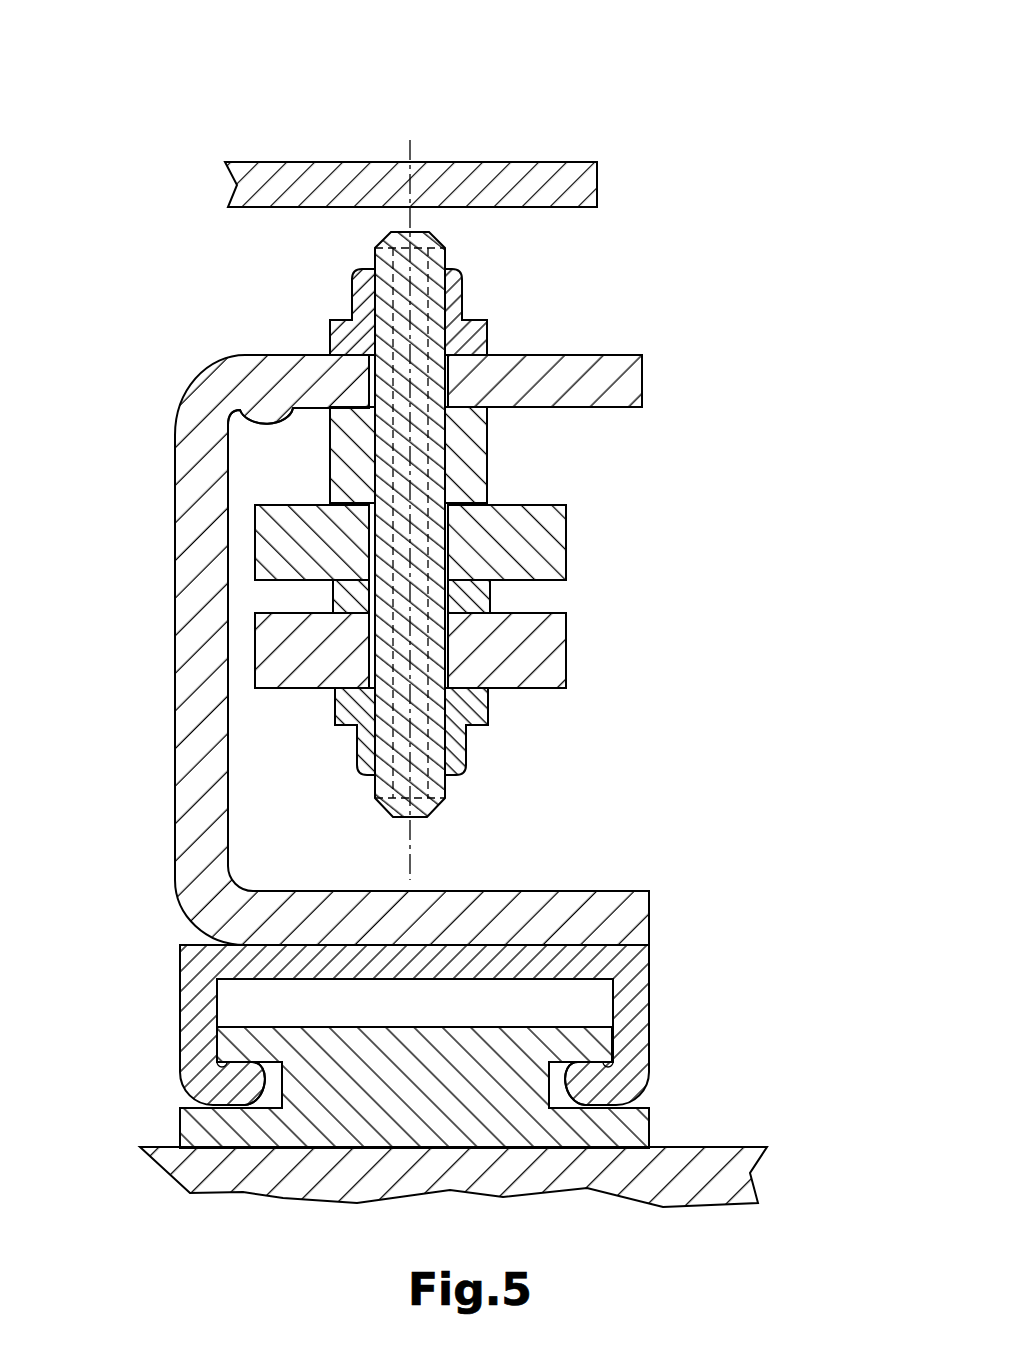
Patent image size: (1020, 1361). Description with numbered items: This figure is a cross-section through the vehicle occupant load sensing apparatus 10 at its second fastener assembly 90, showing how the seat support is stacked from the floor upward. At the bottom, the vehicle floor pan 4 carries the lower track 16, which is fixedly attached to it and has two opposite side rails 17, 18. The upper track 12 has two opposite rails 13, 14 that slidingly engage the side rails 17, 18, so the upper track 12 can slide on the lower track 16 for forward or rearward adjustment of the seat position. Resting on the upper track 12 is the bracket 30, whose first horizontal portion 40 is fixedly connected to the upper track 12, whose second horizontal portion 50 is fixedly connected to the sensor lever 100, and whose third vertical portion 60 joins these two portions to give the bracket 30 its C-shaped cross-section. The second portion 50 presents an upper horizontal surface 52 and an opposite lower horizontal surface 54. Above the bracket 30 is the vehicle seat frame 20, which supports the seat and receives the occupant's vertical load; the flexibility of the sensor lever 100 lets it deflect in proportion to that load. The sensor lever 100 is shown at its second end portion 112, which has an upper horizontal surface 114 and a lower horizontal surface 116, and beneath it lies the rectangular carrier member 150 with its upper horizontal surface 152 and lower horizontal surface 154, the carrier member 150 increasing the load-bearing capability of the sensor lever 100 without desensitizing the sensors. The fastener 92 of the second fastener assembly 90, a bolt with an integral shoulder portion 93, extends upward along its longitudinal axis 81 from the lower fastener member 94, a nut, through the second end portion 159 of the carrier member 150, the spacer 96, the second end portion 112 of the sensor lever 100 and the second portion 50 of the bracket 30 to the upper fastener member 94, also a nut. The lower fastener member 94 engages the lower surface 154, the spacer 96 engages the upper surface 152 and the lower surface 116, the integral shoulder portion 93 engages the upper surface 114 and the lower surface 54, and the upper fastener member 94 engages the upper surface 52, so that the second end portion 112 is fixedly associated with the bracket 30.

The vehicle floor pan 4 is at (149, 1137).
The vehicle occupant load sensing apparatus 10 is at (606, 84).
The upper track 12 is at (686, 986).
The rail 13 is at (242, 1083).
The rail 14 is at (583, 1078).
The lower track 16 is at (677, 1126).
The side rail 17 is at (237, 1045).
The side rail 18 is at (593, 1050).
The vehicle seat frame 20 is at (312, 150).
The bracket 30 is at (624, 320).
The first horizontal portion 40 is at (625, 922).
The second horizontal portion 50 is at (602, 382).
The upper horizontal surface 52 is at (283, 355).
The lower horizontal surface 54 is at (232, 418).
The third vertical portion 60 is at (200, 702).
The longitudinal axis 81 is at (416, 848).
The second fastener assembly 90 is at (297, 279).
The fastener 92 is at (442, 797).
The integral shoulder portion 93 is at (487, 460).
The upper and lower fastener members 94 is at (463, 290).
The spacer 96 is at (492, 596).
The sensor lever 100 is at (612, 517).
The second end portion 112 is at (512, 535).
The upper horizontal surface 114 is at (267, 503).
The lower horizontal surface 116 is at (290, 593).
The carrier member 150 is at (594, 662).
The upper horizontal surface 152 is at (272, 603).
The lower horizontal surface 154 is at (278, 691).
The second end portion 159 is at (532, 665).